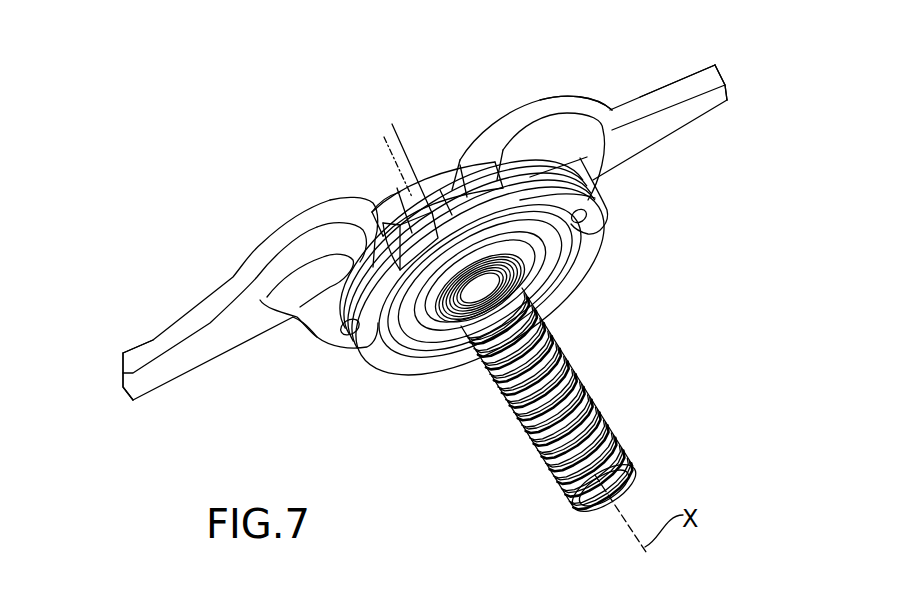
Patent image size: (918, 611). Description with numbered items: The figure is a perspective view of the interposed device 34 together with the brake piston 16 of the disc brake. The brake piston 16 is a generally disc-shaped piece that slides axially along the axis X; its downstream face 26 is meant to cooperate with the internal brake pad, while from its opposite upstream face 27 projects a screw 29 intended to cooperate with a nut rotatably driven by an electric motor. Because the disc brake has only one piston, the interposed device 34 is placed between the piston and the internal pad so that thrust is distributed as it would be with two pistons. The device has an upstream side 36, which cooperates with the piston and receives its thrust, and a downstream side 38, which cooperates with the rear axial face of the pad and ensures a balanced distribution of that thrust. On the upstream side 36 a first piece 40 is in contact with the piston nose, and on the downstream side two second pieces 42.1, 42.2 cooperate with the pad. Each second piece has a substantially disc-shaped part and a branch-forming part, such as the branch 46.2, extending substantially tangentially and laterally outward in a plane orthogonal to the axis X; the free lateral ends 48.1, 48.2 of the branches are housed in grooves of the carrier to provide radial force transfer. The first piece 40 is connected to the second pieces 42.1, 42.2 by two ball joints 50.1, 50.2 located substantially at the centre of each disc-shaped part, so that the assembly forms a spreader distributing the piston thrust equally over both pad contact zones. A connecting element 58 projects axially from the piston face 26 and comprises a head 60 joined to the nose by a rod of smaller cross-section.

The brake piston 16 is at (600, 270).
The downstream face 26 is at (510, 170).
The upstream face 27 is at (423, 363).
The screw 29 is at (592, 400).
The interposed device 34 is at (390, 182).
The upstream side 36 is at (605, 228).
The downstream side 38 is at (515, 103).
The first piece 40 is at (305, 328).
The second piece 42.1 is at (212, 260).
The second piece 42.2 is at (610, 90).
The branch-forming part 46.2 is at (152, 342).
The free lateral end 48.1 is at (128, 377).
The free lateral end 48.2 is at (728, 91).
The ball joint 50.1 is at (292, 236).
The ball joint 50.2 is at (558, 133).
The connecting element 58 is at (403, 156).
The head 60 is at (447, 207).